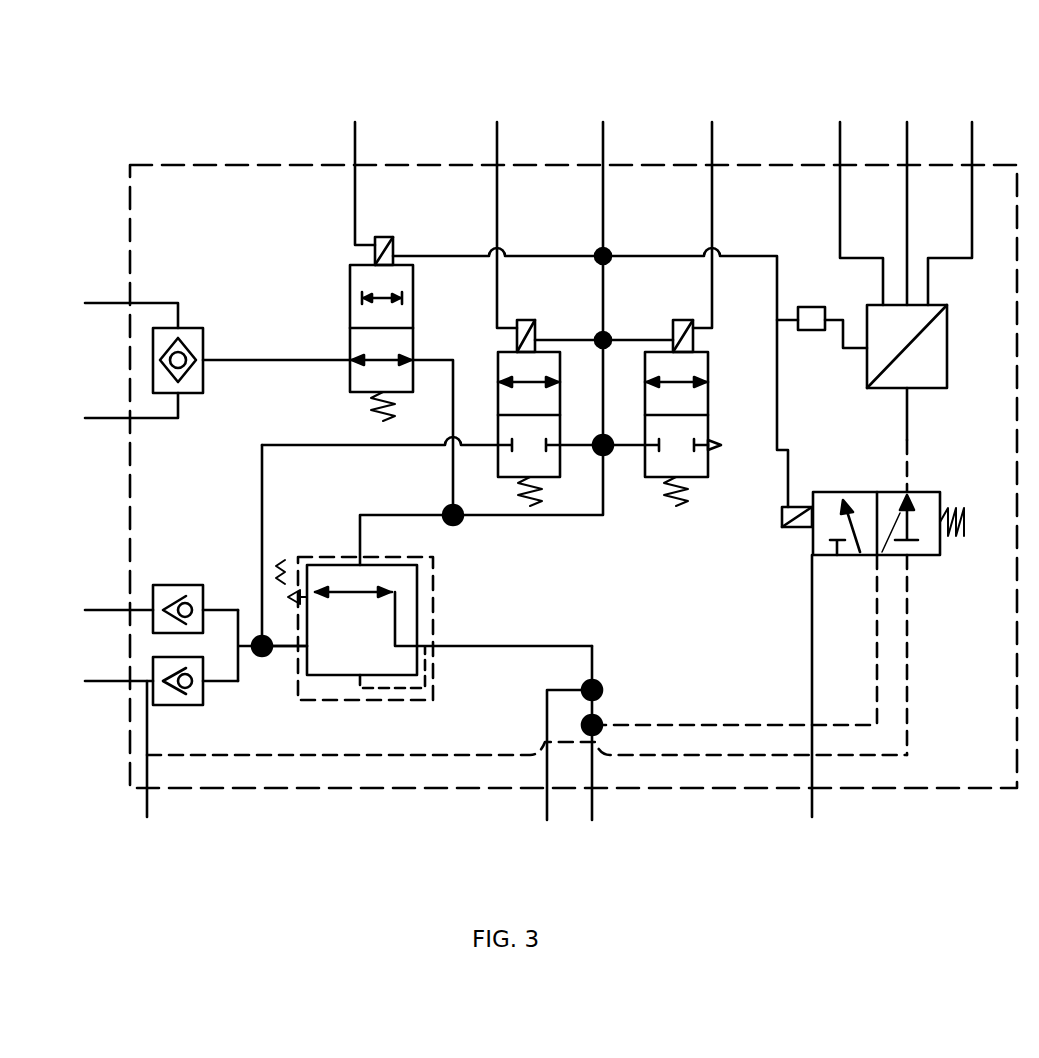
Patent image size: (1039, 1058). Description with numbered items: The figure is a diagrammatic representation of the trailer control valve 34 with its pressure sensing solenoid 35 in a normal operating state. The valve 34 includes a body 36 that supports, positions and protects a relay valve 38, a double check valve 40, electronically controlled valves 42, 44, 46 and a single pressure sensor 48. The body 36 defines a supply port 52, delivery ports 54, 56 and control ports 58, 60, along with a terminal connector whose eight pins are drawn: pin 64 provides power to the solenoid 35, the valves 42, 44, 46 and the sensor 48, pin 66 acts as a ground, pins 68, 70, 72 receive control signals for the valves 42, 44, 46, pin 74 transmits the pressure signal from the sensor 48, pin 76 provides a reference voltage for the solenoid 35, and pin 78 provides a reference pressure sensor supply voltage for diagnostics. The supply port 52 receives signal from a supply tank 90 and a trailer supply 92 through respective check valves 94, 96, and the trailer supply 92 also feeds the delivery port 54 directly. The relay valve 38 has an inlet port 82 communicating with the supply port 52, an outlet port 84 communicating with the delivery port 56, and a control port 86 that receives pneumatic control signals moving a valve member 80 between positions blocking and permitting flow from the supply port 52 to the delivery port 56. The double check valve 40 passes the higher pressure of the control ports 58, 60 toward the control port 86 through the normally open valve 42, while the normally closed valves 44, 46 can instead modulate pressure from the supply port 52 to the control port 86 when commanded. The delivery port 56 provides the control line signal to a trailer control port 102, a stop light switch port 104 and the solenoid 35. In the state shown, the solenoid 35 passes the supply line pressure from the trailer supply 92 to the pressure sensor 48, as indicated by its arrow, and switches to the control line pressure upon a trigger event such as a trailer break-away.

The valve 34 is at (192, 76).
The body 36 is at (217, 167).
The relay valve 38 is at (409, 642).
The double check valve 40 is at (175, 332).
The electronically controlled valve 42 is at (413, 315).
The electronically controlled valve 44 is at (493, 362).
The electronically controlled valve 46 is at (705, 362).
The pressure sensor 48 is at (945, 332).
The pressure sensing solenoid 35 is at (885, 492).
The supply port 52 is at (262, 633).
The delivery port 54 is at (146, 765).
The delivery port 56 is at (603, 684).
The control port 58 is at (113, 412).
The control port 60 is at (113, 309).
The pin 64 is at (602, 271).
The pin 66 is at (854, 201).
The pin 68 is at (357, 171).
The pin 70 is at (499, 212).
The pin 72 is at (709, 212).
The pin 74 is at (906, 426).
The pin 76 is at (811, 702).
The pin 78 is at (957, 201).
The valve member 80 is at (342, 592).
The inlet port 82 is at (298, 692).
The outlet port 84 is at (403, 645).
The control port 86 is at (358, 542).
The supply tank 90 is at (101, 611).
The trailer supply 92 is at (101, 682).
The check valve 94 is at (178, 585).
The check valve 96 is at (178, 705).
The trailer control port 102 is at (554, 770).
The stop light switch port 104 is at (592, 748).